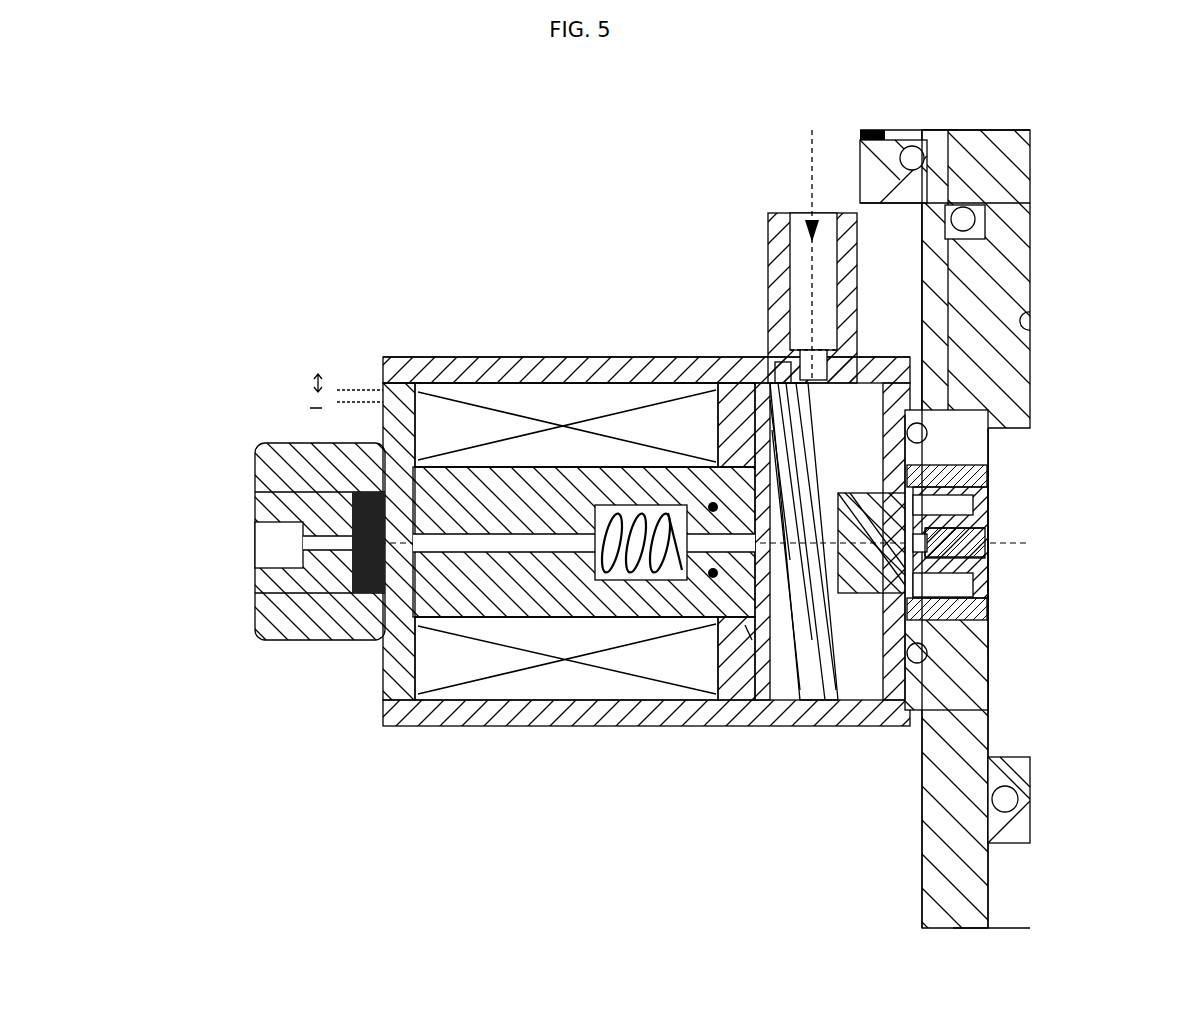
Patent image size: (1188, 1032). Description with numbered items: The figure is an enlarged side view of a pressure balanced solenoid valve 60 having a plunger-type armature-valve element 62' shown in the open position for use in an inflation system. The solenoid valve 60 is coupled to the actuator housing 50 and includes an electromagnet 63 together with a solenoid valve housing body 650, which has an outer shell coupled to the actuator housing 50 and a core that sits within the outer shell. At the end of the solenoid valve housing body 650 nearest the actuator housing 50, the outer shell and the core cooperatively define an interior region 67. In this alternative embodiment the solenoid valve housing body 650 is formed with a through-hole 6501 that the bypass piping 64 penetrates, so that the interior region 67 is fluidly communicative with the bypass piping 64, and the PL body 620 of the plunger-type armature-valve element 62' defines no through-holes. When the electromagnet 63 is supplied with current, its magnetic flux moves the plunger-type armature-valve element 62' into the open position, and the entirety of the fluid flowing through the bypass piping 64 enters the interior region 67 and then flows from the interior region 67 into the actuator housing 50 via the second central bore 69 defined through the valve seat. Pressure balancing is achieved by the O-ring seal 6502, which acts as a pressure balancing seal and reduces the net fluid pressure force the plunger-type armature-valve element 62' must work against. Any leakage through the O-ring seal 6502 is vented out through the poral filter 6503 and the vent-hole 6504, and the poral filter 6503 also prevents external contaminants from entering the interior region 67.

The actuator housing 50 is at (1024, 393).
The solenoid valve 60 is at (438, 348).
The electromagnet 63 is at (575, 410).
The bypass piping 64 is at (780, 257).
The interior region 67 is at (915, 565).
The second central bore 69 is at (975, 548).
The PL body 620 is at (785, 572).
The solenoid valve housing body 650 is at (686, 370).
The through-hole 6501 is at (786, 355).
The O-ring seal 6502 is at (713, 573).
The poral filter 6503 is at (357, 562).
The vent-hole 6504 is at (303, 543).
The plunger-type armature-valve element 62' is at (663, 701).